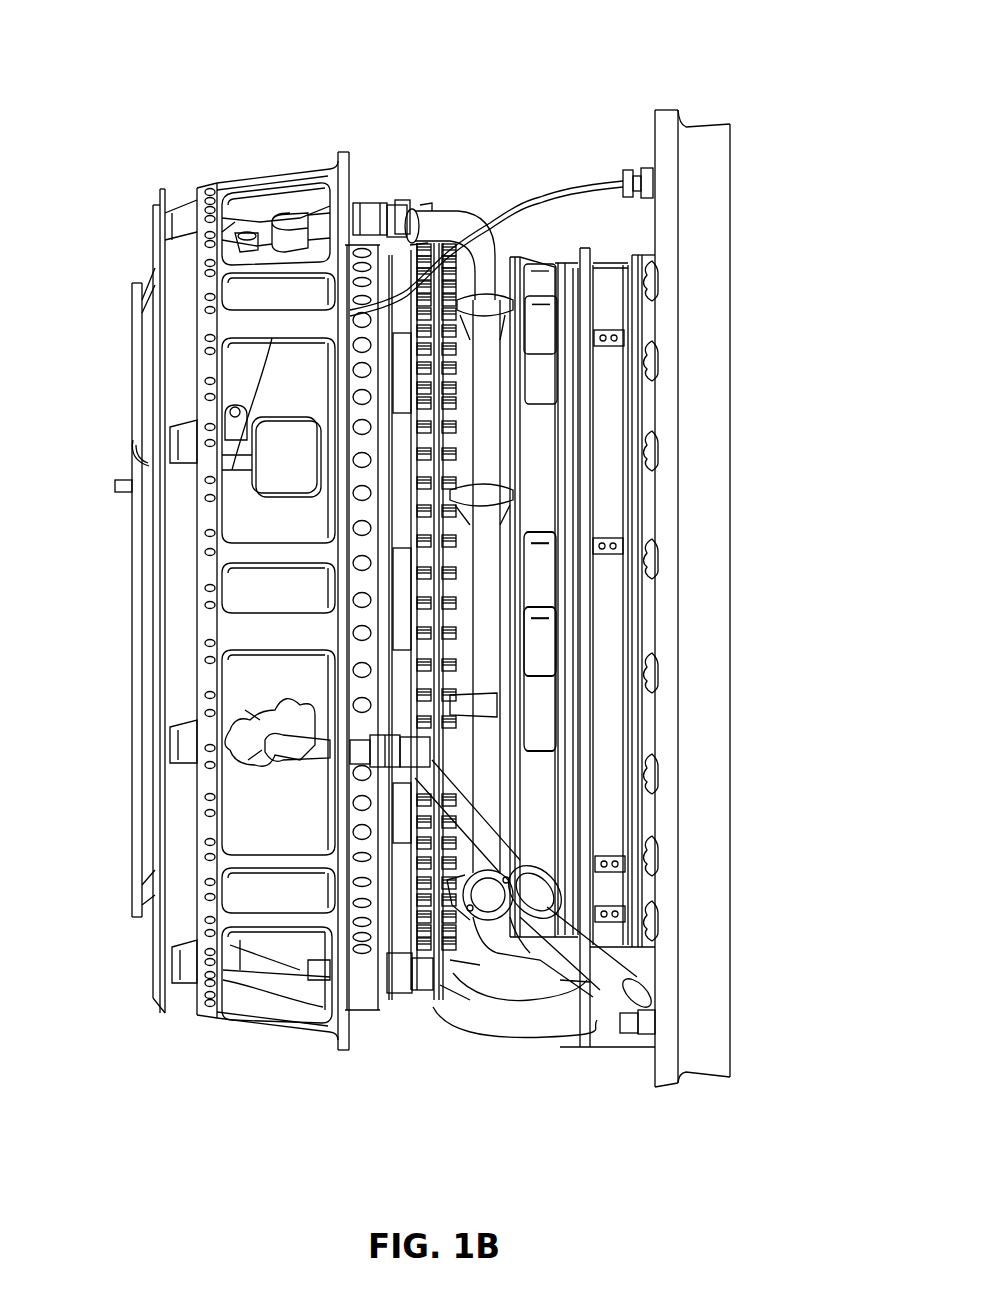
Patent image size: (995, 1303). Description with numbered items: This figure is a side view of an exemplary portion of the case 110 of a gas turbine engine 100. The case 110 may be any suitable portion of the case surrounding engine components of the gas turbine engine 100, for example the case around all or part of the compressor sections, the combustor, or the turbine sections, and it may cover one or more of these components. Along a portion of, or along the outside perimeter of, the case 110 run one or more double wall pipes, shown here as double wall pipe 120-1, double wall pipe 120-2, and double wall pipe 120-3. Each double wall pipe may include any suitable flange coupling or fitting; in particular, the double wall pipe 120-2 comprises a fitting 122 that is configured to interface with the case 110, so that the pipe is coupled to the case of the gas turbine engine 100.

The gas turbine engine 100 is at (86, 58).
The case 110 is at (538, 258).
The double wall pipe 120-1 is at (435, 222).
The double wall pipe 120-2 is at (610, 982).
The double wall pipe 120-3 is at (510, 1028).
The fitting 122 is at (222, 745).